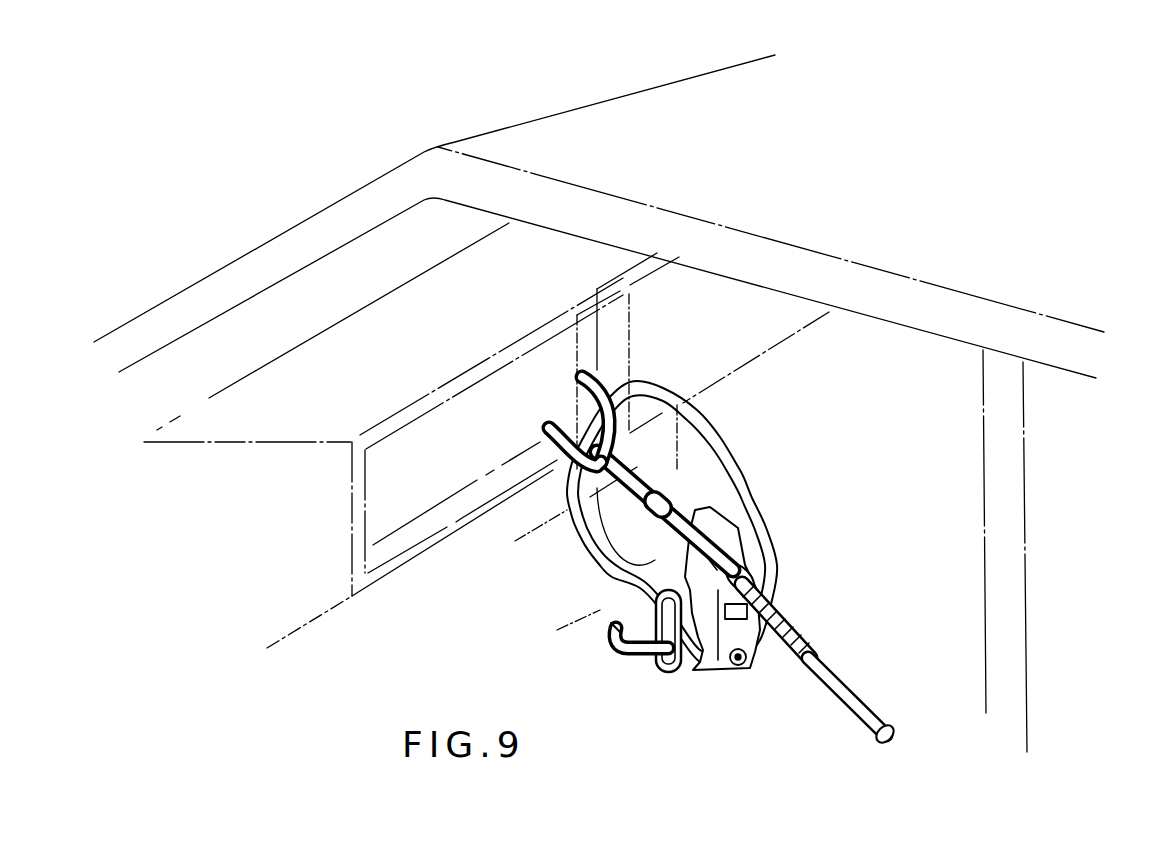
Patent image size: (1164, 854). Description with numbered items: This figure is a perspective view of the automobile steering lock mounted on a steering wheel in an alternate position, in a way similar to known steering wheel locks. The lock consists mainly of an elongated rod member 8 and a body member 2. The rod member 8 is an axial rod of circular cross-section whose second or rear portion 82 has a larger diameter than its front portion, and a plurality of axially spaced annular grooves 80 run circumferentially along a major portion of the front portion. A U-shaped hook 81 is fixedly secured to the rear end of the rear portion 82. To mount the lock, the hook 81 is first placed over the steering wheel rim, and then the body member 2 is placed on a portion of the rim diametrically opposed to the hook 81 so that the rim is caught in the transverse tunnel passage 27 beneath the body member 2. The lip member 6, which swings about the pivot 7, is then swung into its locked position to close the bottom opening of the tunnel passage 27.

The body member 2 is at (703, 682).
The lip member 6 is at (610, 630).
The pivot 7 is at (635, 667).
The elongated rod member 8 is at (702, 507).
The transverse tunnel passage 27 is at (656, 608).
The annular grooves 80 is at (783, 613).
The U-shaped hook 81 is at (630, 369).
The second or rear portion 82 is at (614, 524).